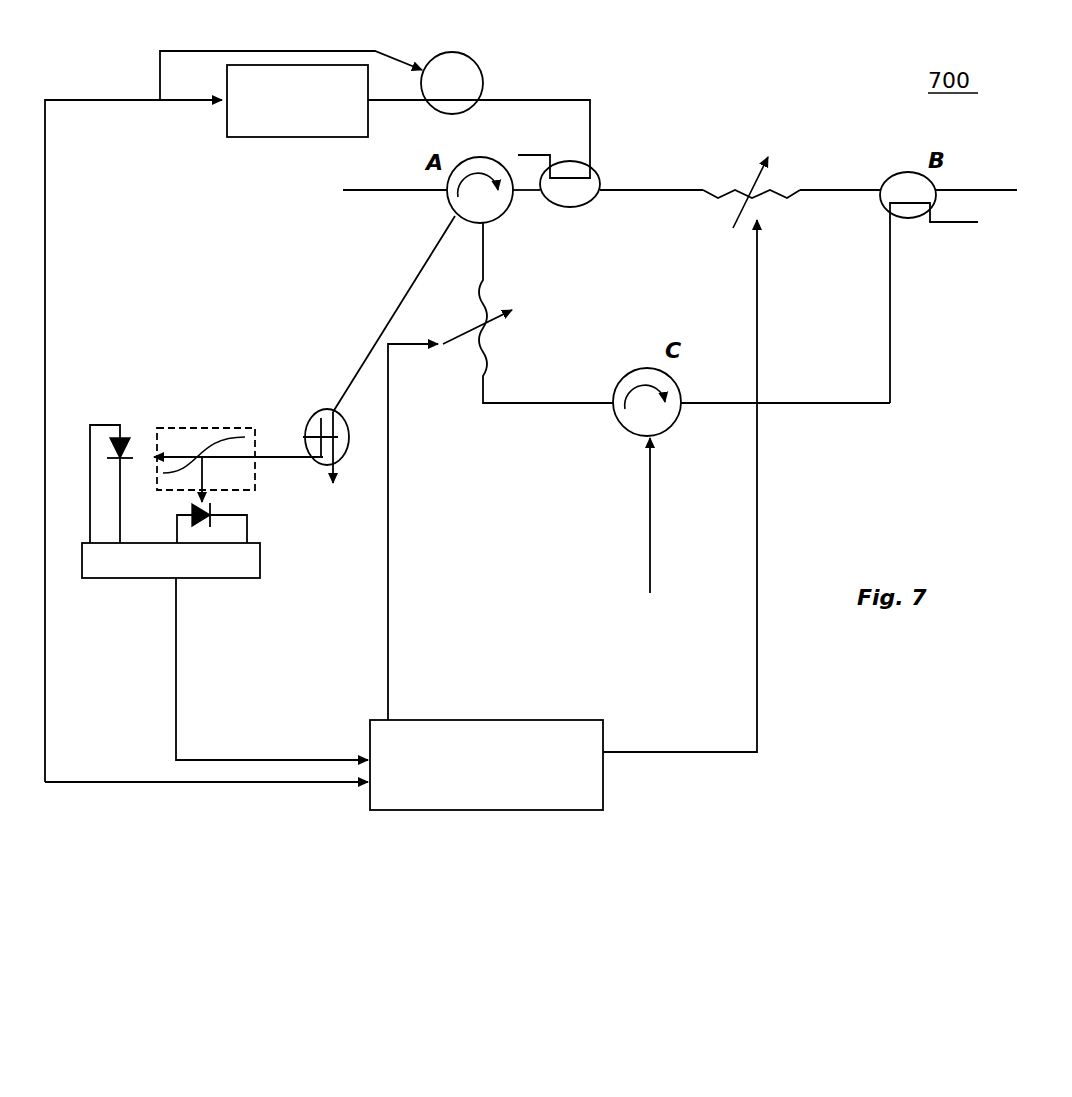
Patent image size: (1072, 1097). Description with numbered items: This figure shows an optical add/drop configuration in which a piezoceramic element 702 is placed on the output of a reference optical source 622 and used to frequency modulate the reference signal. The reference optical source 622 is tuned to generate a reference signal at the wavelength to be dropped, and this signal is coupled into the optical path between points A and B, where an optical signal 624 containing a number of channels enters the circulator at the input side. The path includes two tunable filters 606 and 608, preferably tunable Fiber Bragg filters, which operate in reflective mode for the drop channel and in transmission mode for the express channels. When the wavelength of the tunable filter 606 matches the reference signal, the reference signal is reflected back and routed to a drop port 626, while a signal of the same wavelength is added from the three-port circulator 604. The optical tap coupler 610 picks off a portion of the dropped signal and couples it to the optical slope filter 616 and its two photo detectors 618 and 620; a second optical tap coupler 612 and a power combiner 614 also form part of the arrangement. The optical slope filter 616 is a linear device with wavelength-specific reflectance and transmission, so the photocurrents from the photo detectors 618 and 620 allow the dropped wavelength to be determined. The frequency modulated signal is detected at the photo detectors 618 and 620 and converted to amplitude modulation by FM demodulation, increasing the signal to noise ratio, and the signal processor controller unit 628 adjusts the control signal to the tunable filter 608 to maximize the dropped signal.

The optical coupler 702 is at (456, 68).
The 3-port circulator 604 is at (680, 428).
The tunable filter 606 is at (490, 287).
The tunable filter 608 is at (775, 206).
The optical tap coupler 610 is at (325, 410).
The optical tap coupler 612 is at (598, 173).
The power combiner 614 is at (882, 175).
The optical slope filter 616 is at (195, 440).
The photo detector 618 is at (258, 525).
The photo detector 620 is at (100, 418).
The reference optical source 622 is at (222, 125).
The optical signal 624 is at (352, 183).
The drop port 626 is at (640, 490).
The signal processor controller unit 628 is at (608, 767).